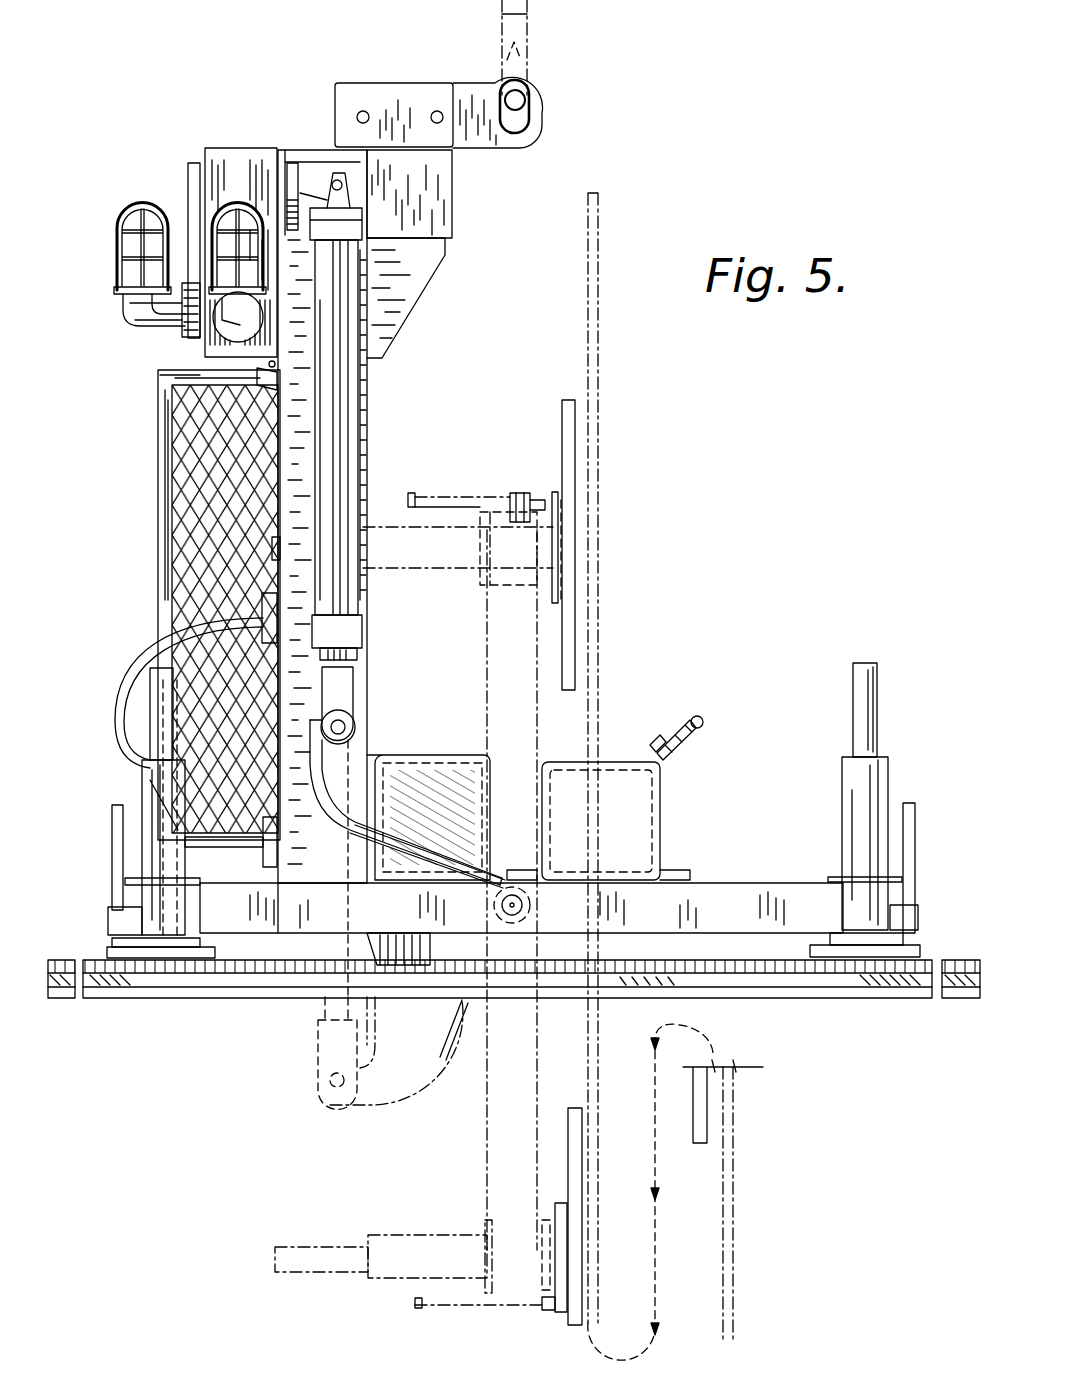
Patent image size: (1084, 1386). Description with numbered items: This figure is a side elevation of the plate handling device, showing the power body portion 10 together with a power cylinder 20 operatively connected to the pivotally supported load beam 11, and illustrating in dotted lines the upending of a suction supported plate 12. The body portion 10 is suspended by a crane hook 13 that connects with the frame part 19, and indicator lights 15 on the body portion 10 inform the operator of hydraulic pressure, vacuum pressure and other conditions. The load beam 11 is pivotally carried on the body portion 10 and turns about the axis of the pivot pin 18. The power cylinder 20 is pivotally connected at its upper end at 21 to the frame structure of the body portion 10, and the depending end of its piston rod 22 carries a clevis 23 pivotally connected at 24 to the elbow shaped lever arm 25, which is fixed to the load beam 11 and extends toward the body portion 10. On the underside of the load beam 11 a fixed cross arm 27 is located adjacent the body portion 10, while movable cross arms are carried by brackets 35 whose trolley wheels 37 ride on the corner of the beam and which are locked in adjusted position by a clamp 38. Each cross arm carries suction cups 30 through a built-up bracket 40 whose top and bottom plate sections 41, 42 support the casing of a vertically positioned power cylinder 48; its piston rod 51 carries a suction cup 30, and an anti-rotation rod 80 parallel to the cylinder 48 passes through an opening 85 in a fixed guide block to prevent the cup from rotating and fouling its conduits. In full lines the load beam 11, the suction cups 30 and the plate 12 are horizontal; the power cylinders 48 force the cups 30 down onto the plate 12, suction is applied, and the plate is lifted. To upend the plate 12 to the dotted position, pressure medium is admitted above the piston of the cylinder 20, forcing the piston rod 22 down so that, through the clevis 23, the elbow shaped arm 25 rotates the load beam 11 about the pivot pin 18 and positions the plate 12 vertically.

The power body portion 10 is at (150, 511).
The load beam 11 is at (408, 867).
The plate 12 is at (600, 465).
The hook 13 is at (523, 68).
The indicator lights 15 is at (235, 203).
The pivot pin 18 is at (522, 915).
The frame part 19 is at (398, 100).
The power cylinder 20 is at (335, 450).
The pivotal connection 21 is at (342, 185).
The piston rod 22 is at (362, 655).
The clevis 23 is at (355, 682).
The pivotal connection 24 is at (340, 727).
The elbow shaped lever arm 25 is at (412, 790).
The cross arm 27 is at (732, 883).
The suction cups 30 is at (580, 402).
The bracket 35 is at (442, 747).
The trolley wheels 37 is at (680, 730).
The clamp 38 is at (703, 722).
The built-up bracket 40 is at (175, 892).
The top plate section 41 is at (480, 548).
The bottom plate section 42 is at (548, 556).
The power cylinder 48 is at (397, 560).
The piston rod 51 is at (297, 545).
The anti-rotation rod 80 is at (465, 500).
The opening 85 is at (108, 917).